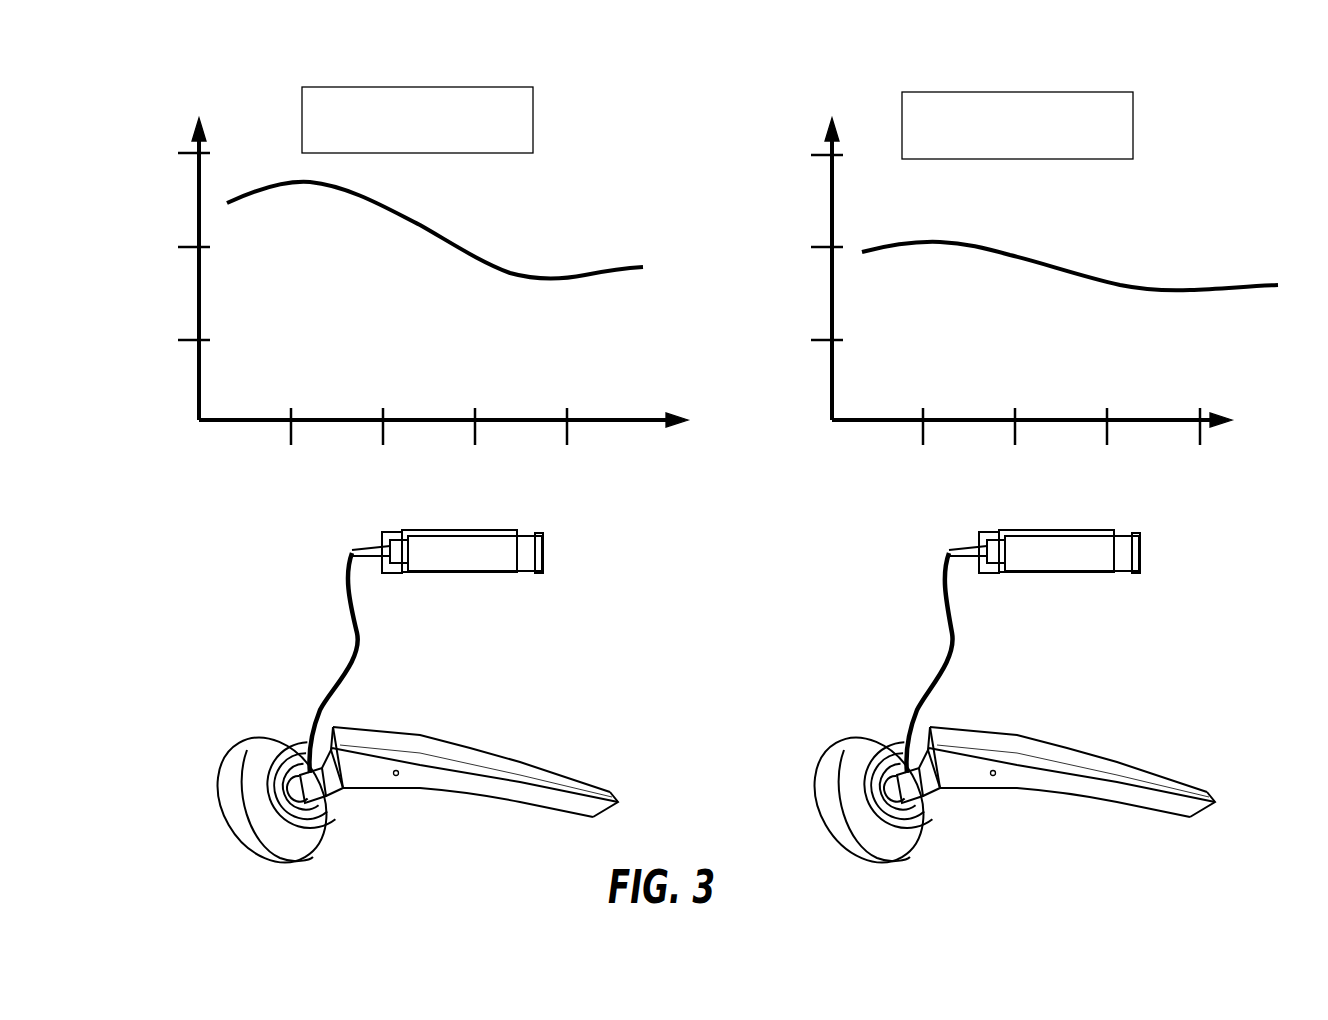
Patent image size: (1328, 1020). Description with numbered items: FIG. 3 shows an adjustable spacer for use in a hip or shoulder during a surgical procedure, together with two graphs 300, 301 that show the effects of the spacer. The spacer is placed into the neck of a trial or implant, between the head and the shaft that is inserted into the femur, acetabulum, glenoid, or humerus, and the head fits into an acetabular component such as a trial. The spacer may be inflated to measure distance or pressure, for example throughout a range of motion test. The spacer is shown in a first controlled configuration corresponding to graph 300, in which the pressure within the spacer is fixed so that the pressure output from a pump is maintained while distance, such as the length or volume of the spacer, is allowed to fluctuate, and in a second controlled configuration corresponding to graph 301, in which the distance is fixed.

The graph 300 is at (596, 103).
The graph 301 is at (1213, 104).